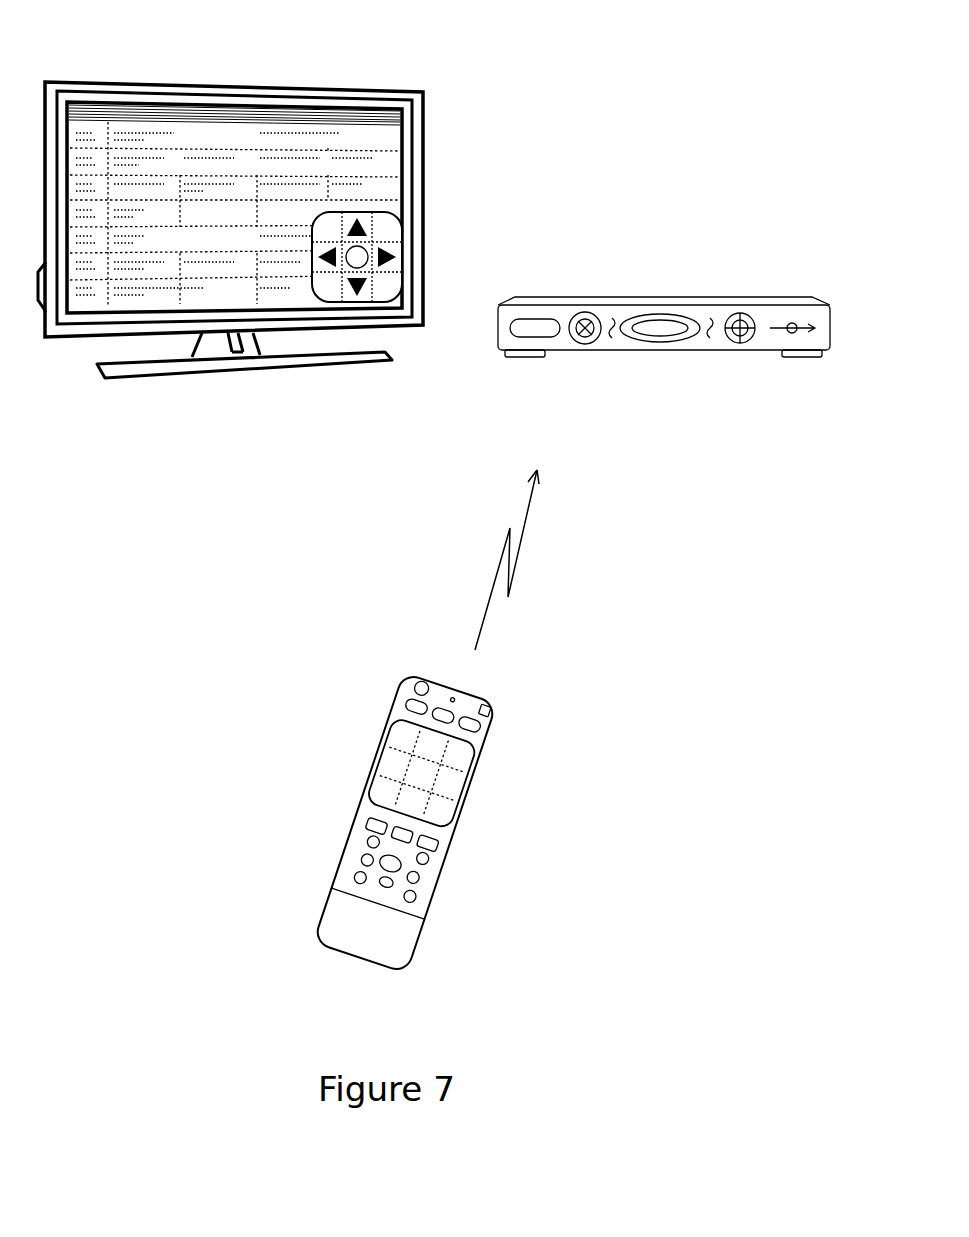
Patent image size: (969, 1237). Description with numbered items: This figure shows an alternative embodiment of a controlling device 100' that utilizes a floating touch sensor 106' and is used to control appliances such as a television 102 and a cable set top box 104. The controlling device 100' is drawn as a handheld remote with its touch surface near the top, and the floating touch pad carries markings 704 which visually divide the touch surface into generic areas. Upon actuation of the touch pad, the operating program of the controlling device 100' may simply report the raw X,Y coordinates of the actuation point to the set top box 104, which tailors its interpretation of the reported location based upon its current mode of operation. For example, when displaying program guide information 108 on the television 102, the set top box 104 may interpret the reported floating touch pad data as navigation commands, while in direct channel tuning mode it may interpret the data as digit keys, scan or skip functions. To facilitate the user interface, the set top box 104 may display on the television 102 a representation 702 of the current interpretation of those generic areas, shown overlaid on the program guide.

The television 102 is at (357, 90).
The program guide menu display 108 is at (357, 187).
The representation of the current interpretation of touch pad areas 702 is at (405, 264).
The set top box 104 is at (720, 292).
The markings 704 is at (447, 765).
The floating touch sensor 106' is at (362, 797).
The controlling device 100' is at (402, 821).